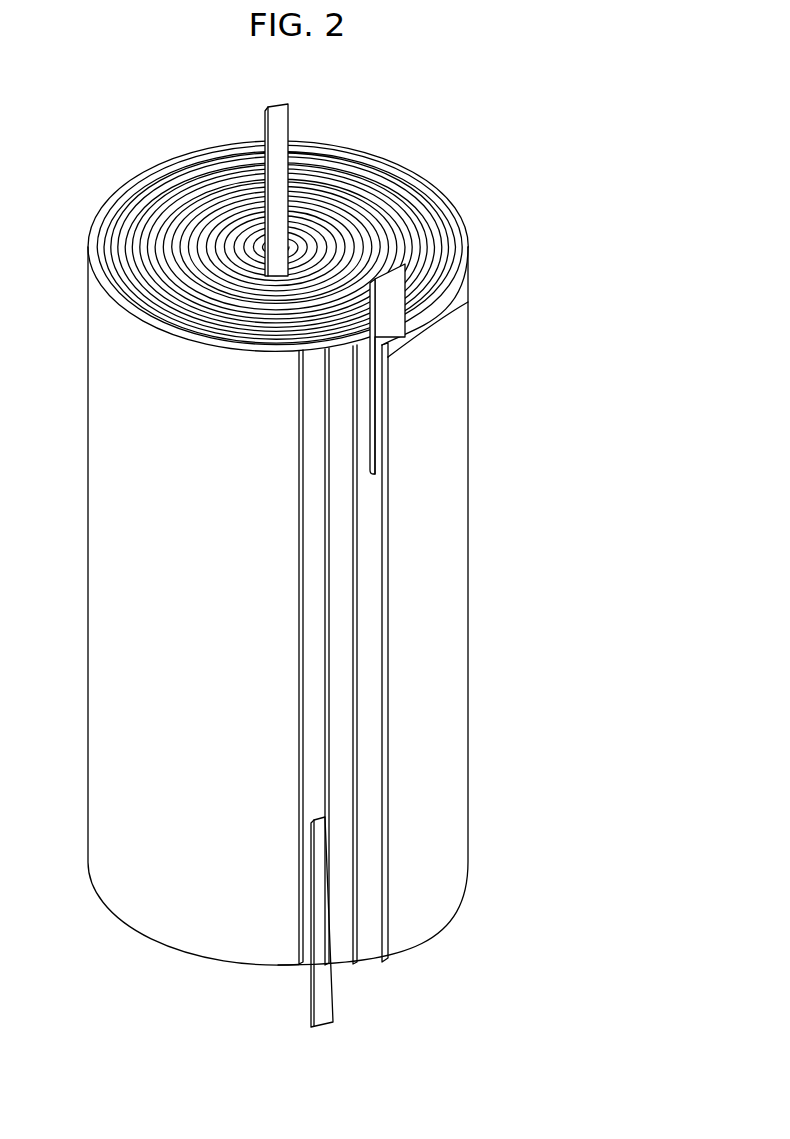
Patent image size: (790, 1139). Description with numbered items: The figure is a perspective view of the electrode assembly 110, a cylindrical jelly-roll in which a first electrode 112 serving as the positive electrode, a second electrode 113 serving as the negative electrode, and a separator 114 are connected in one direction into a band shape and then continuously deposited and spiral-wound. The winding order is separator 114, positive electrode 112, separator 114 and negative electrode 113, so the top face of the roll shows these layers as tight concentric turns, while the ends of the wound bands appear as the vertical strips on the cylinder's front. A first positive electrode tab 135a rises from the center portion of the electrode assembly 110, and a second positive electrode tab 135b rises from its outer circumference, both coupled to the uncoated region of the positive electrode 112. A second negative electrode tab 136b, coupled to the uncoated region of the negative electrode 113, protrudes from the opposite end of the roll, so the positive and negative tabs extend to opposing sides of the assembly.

The electrode assembly 110 is at (468, 598).
The first electrode 112 is at (368, 953).
The second electrode 113 is at (303, 963).
The separator 114 is at (413, 925).
The first positive electrode tab 135a is at (280, 127).
The second positive electrode tab 135b is at (388, 308).
The second negative electrode tab 136b is at (311, 1012).